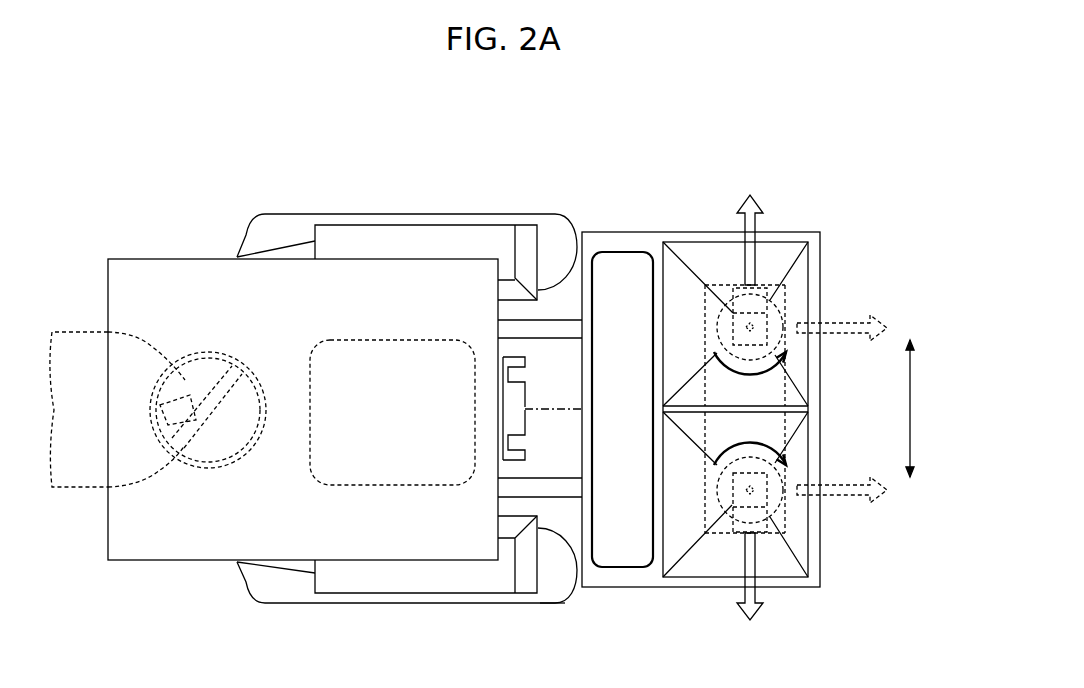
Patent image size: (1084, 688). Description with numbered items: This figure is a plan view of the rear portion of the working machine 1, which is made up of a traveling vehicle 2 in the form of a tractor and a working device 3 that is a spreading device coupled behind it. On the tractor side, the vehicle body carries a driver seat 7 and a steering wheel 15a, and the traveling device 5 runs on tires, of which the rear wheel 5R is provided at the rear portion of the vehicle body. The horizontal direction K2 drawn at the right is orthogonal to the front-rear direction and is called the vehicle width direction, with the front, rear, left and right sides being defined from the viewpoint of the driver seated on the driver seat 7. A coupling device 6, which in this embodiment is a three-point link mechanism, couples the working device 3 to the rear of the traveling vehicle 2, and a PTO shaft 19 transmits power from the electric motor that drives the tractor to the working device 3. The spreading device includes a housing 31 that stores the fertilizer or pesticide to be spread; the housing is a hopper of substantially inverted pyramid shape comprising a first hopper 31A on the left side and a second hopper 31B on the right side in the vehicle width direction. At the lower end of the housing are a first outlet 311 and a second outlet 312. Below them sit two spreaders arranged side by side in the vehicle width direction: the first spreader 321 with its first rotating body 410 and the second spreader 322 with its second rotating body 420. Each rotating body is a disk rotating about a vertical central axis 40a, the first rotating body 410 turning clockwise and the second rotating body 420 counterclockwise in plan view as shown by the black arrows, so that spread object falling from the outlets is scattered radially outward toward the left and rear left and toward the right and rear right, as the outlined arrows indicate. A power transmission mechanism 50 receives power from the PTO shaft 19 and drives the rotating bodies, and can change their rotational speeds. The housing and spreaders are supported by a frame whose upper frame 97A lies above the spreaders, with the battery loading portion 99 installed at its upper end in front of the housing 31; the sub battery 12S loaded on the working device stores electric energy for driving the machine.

The working machine 1 is at (666, 141).
The traveling vehicle 2 is at (179, 238).
The working device 3 is at (867, 190).
The traveling device 5 is at (461, 189).
The rear wheel 5R is at (551, 604).
The coupling device 6 is at (568, 510).
The driver seat 7 is at (402, 487).
The sub battery 12S is at (616, 241).
The steering wheel 15a is at (198, 468).
The PTO shaft 19 is at (522, 517).
The housing 31 is at (683, 250).
The first hopper 31A is at (733, 567).
The second hopper 31B is at (708, 255).
The power transmission mechanism 50 is at (705, 487).
The battery loading portion 99 is at (637, 578).
The first outlet 311 is at (705, 490).
The second outlet 312 is at (758, 313).
The first spreader 321 is at (765, 532).
The second spreader 322 is at (726, 290).
The first rotating body 410 is at (785, 495).
The second rotating body 420 is at (770, 300).
The central axis 40a is at (768, 290).
The upper frame 97A is at (825, 583).
The horizontal direction K2 is at (912, 425).